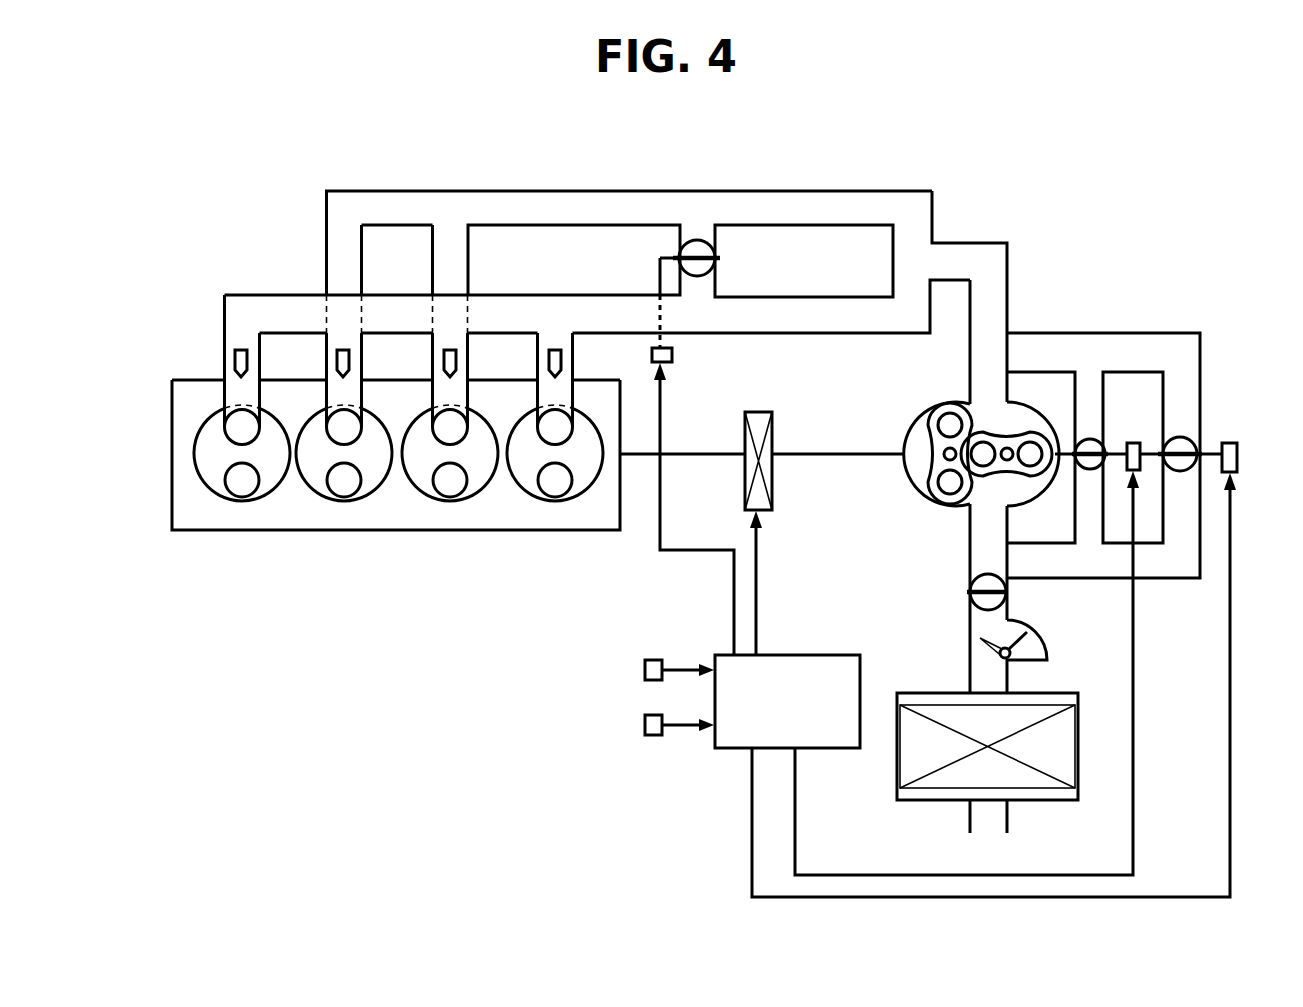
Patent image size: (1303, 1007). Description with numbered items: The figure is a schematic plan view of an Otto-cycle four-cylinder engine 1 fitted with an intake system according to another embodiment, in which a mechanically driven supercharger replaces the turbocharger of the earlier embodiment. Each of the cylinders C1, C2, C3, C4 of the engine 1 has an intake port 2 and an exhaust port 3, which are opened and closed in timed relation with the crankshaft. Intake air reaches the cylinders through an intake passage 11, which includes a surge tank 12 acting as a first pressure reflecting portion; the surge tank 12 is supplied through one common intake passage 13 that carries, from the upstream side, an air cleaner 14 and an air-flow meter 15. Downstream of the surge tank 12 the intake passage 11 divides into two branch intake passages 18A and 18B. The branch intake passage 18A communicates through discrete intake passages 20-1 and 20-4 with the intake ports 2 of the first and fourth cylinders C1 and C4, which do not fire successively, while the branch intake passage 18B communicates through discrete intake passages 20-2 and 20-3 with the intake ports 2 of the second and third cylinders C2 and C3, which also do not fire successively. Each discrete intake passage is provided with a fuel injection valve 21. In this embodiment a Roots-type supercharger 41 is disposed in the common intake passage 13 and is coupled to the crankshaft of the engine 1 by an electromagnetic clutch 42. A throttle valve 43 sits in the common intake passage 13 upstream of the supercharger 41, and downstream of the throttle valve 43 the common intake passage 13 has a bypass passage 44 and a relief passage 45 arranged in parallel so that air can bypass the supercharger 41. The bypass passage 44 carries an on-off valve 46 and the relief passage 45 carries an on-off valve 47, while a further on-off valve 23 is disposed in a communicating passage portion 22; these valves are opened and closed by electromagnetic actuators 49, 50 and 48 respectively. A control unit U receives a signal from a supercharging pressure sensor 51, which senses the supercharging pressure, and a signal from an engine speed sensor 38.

The engine 1 is at (150, 471).
The intake port 2 is at (259, 433).
The exhaust port 3 is at (233, 485).
The intake passage 11 is at (1028, 182).
The surge tank 12 is at (913, 232).
The common intake passage 13 is at (968, 367).
The air cleaner 14 is at (1070, 748).
The air-flow meter 15 is at (1032, 645).
The branch intake passage 18A is at (812, 335).
The branch intake passage 18B is at (805, 190).
The discrete intake passage 20-1 is at (592, 364).
The discrete intake passage 20-2 is at (487, 364).
The discrete intake passage 20-3 is at (376, 364).
The discrete intake passage 20-4 is at (277, 364).
The fuel injection valve 21 is at (241, 347).
The communicating passage portion 22 is at (714, 241).
The on-off valve 23 is at (712, 268).
The engine speed sensor 38 is at (644, 668).
The Roots-type supercharger 41 is at (910, 492).
The electromagnetic clutch 42 is at (773, 493).
The throttle valve 43 is at (985, 603).
The bypass passage 44 is at (1190, 388).
The relief passage 45 is at (1097, 388).
The on-off valve 46 is at (1185, 442).
The on-off valve 47 is at (1103, 447).
The electromagnetic actuator 48 is at (676, 354).
The electromagnetic actuator 49 is at (1240, 453).
The electromagnetic actuator 50 is at (1143, 470).
The supercharging pressure sensor 51 is at (644, 725).
The control unit U is at (862, 668).
The first cylinder C1 is at (586, 487).
The second cylinder C2 is at (484, 487).
The third cylinder C3 is at (378, 487).
The fourth cylinder C4 is at (276, 487).